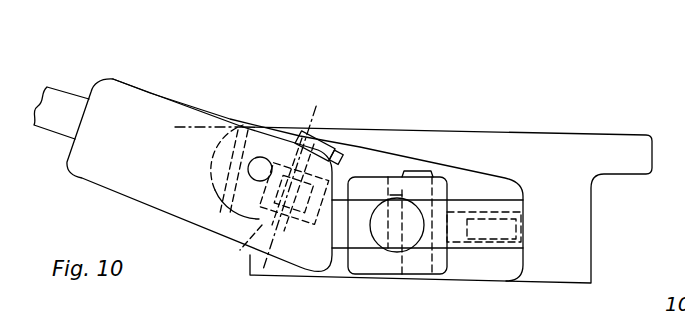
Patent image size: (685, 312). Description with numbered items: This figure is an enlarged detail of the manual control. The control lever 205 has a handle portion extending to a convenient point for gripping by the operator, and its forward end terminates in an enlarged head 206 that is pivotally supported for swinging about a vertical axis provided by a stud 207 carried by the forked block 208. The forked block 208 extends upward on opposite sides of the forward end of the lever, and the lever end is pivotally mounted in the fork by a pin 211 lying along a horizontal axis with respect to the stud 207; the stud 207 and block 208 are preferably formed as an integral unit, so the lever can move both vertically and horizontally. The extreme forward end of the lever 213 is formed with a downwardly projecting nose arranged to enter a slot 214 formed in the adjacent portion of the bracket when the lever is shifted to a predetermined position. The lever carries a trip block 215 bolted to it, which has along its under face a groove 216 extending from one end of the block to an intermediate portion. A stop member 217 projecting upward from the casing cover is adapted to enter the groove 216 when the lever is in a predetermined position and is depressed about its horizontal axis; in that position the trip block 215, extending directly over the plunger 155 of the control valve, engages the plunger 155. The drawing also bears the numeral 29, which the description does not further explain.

The control lever 205 is at (65, 100).
The head 206 is at (149, 98).
The stud 207 is at (390, 177).
The forked block 208 is at (358, 177).
The pin 211 is at (420, 175).
The extreme forward end of lever 213 is at (503, 228).
The slot 214 is at (523, 224).
The trip block 215 is at (205, 221).
The groove 216 is at (234, 240).
The stop member 217 is at (318, 140).
The plunger 155 is at (262, 157).
The stop 29 is at (326, 147).